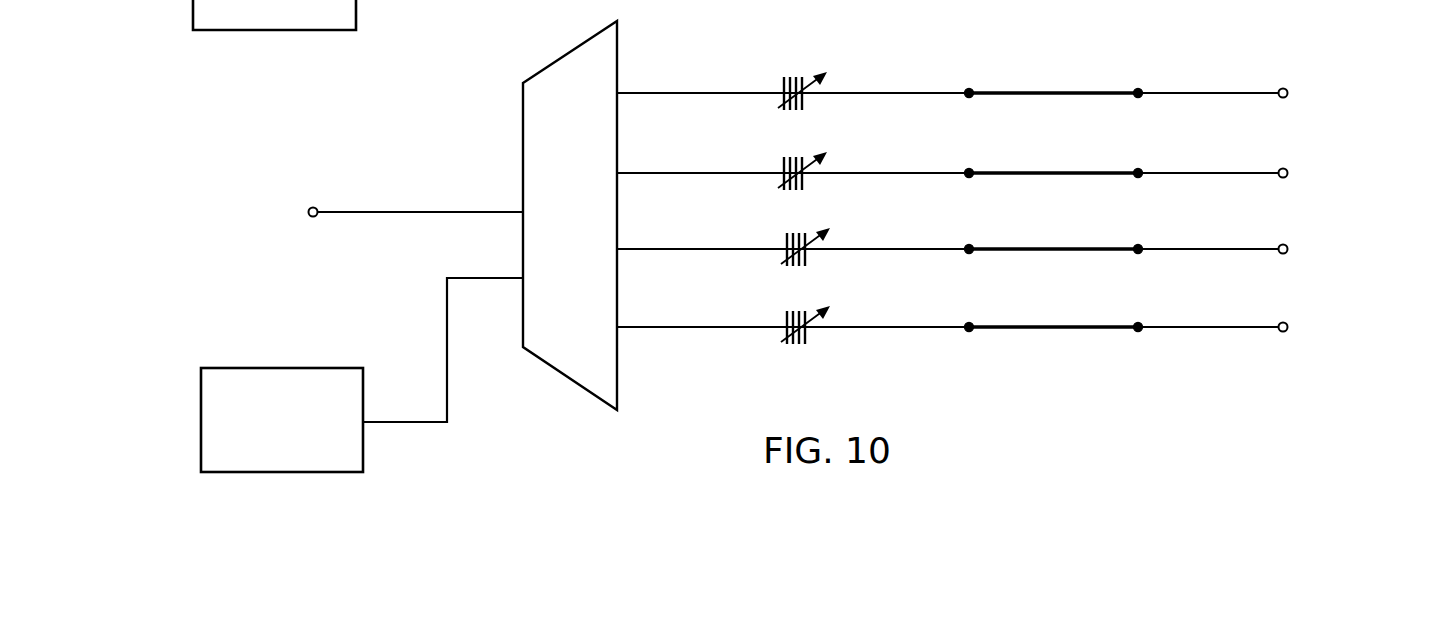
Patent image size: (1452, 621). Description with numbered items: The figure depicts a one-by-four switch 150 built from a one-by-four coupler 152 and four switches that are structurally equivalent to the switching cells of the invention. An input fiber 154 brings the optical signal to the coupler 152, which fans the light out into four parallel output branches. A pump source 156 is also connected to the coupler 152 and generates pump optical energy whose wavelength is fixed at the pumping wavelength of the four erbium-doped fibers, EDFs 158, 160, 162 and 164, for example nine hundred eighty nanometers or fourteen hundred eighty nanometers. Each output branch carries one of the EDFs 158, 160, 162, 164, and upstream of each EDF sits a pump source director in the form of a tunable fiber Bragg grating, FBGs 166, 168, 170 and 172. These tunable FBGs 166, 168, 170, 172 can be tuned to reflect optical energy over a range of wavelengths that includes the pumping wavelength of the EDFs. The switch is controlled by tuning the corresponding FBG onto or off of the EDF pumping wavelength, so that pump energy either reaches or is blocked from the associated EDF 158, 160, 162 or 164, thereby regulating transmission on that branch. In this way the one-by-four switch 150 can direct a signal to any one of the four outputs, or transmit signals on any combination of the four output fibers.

The 1×4 switch 150 is at (1140, 30).
The optical splitter / coupler 152 is at (562, 55).
The input fiber 154 is at (370, 211).
The pump source 156 is at (228, 367).
The EDF 158 is at (1023, 91).
The EDF 160 is at (1023, 171).
The EDF 162 is at (1023, 247).
The EDF 164 is at (1023, 325).
The tunable FBG 166 is at (801, 80).
The tunable FBG 168 is at (801, 160).
The tunable FBG 170 is at (804, 236).
The tunable FBG 172 is at (804, 314).